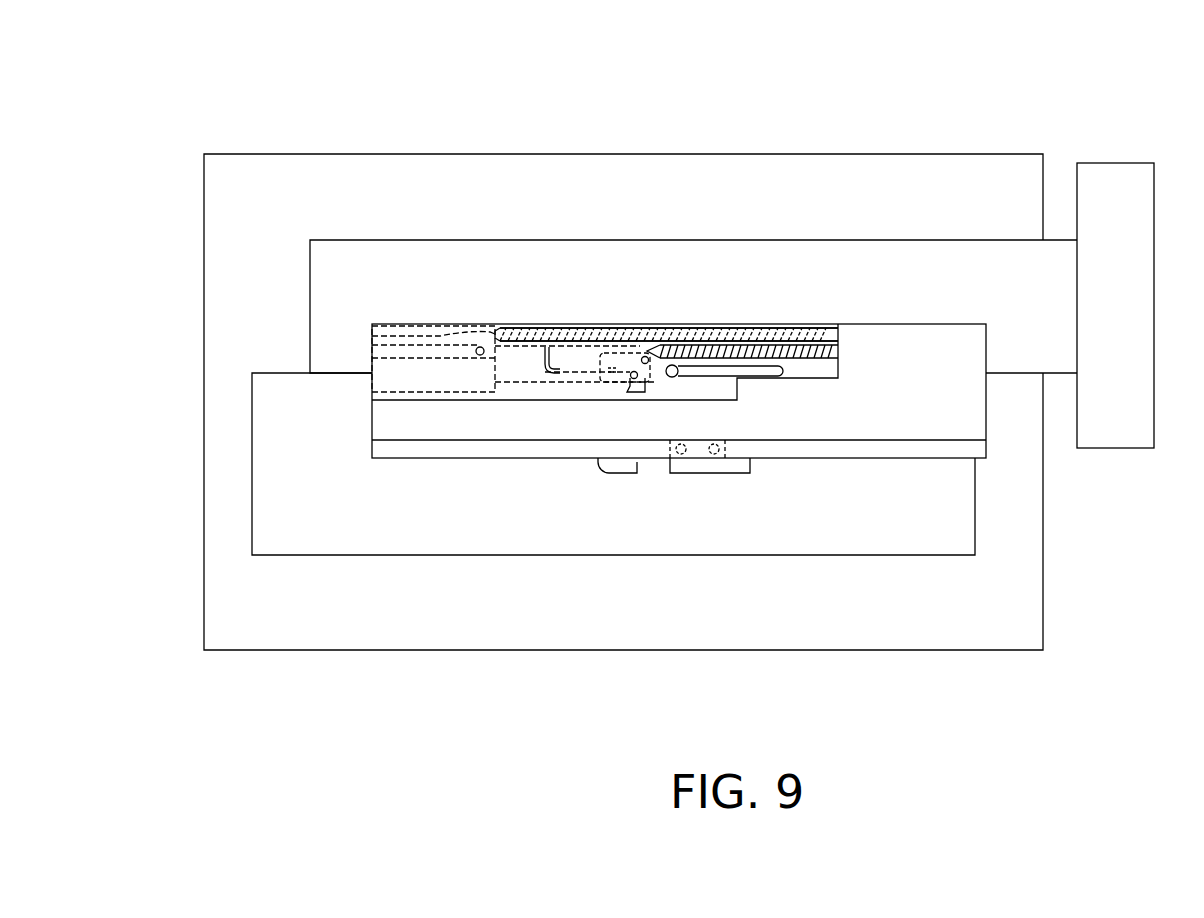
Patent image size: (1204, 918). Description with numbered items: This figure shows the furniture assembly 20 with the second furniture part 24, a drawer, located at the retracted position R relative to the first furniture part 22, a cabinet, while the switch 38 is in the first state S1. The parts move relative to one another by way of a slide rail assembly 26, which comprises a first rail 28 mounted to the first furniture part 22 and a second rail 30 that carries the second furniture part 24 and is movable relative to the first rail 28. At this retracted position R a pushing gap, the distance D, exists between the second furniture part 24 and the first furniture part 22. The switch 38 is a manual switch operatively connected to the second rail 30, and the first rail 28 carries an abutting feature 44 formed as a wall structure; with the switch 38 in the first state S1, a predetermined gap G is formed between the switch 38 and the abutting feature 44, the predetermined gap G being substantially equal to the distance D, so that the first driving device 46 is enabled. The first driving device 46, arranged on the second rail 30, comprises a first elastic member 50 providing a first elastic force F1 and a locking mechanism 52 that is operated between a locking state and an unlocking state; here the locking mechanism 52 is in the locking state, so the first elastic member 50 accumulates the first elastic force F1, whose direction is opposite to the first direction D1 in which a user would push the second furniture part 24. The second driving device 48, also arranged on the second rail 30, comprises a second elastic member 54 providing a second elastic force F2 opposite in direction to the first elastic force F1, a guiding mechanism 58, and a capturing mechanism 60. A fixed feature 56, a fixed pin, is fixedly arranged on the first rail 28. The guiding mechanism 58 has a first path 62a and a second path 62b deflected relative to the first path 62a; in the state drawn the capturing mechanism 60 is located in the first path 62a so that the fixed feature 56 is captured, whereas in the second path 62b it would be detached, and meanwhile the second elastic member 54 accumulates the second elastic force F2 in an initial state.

The furniture assembly 20 is at (430, 118).
The first furniture part 22 is at (798, 185).
The second furniture part 24 is at (1137, 205).
The slide rail assembly 26 is at (296, 343).
The first rail 28 is at (362, 530).
The second rail 30 is at (915, 345).
The switch 38 is at (711, 478).
The abutting feature 44 is at (610, 472).
The first driving device 46 is at (566, 327).
The second driving device 48 is at (766, 374).
The first elastic member 50 is at (707, 335).
The locking mechanism 52 is at (482, 347).
The second elastic member 54 is at (790, 352).
The fixed feature 56 is at (633, 373).
The guiding mechanism 58 is at (497, 712).
The capturing mechanism 60 is at (642, 384).
The first path 62a is at (578, 378).
The second path 62b is at (532, 376).
The first state S1 is at (750, 473).
The retracted position R is at (1153, 448).
The predetermined gap G is at (636, 470).
The distance D is at (1077, 182).
The first direction D1 is at (1095, 99).
The first elastic force F1 is at (775, 309).
The second elastic force F2 is at (858, 367).